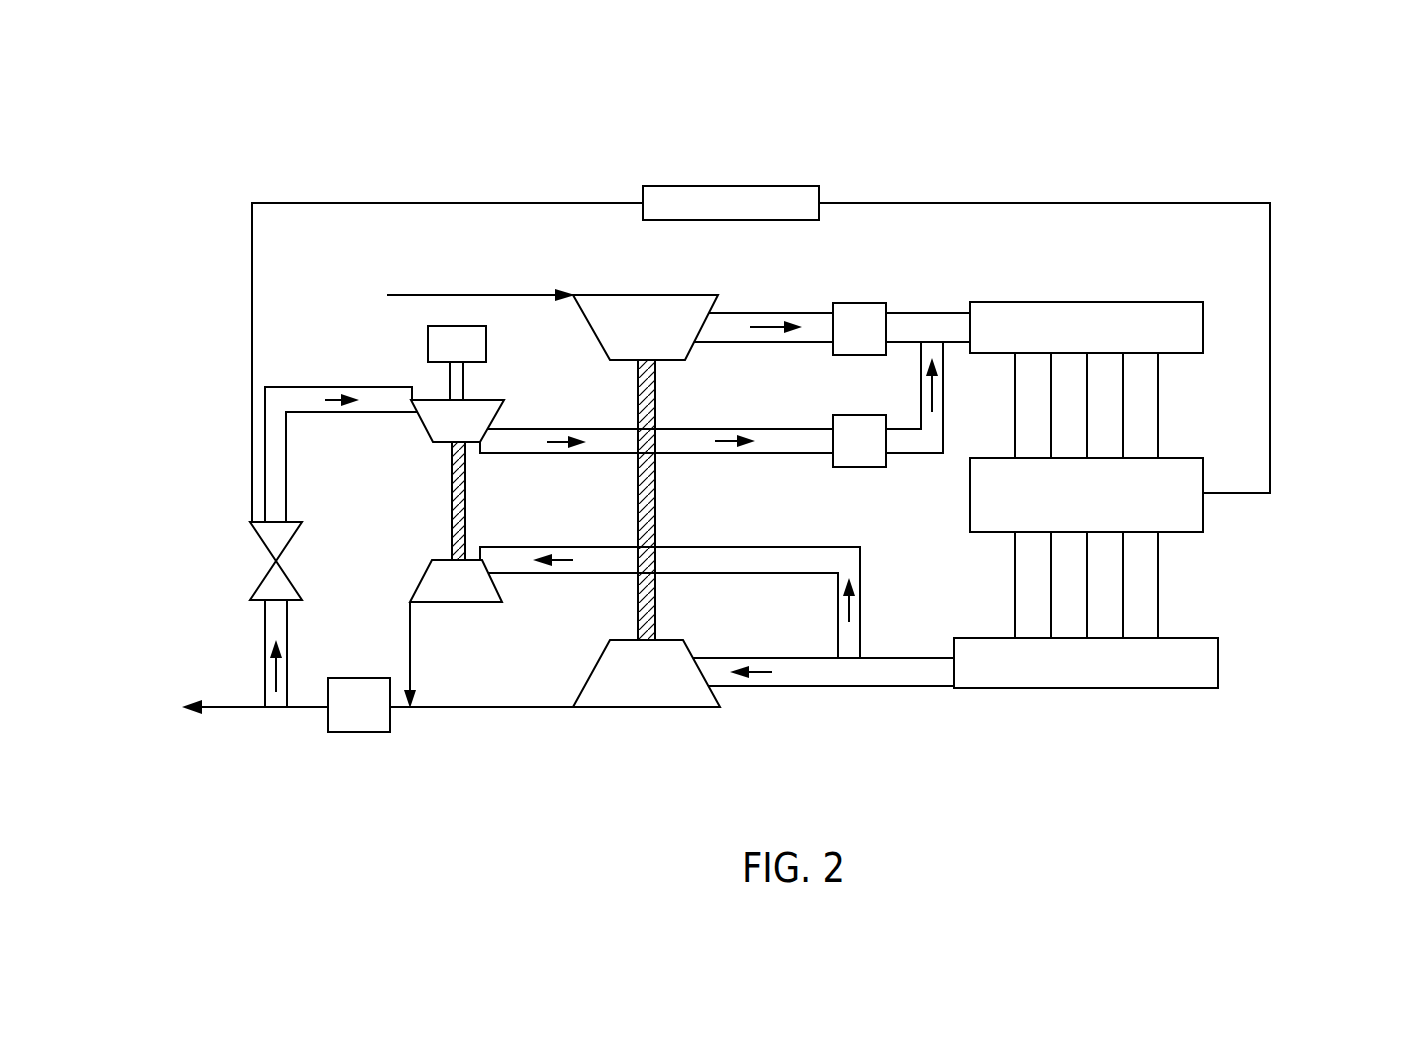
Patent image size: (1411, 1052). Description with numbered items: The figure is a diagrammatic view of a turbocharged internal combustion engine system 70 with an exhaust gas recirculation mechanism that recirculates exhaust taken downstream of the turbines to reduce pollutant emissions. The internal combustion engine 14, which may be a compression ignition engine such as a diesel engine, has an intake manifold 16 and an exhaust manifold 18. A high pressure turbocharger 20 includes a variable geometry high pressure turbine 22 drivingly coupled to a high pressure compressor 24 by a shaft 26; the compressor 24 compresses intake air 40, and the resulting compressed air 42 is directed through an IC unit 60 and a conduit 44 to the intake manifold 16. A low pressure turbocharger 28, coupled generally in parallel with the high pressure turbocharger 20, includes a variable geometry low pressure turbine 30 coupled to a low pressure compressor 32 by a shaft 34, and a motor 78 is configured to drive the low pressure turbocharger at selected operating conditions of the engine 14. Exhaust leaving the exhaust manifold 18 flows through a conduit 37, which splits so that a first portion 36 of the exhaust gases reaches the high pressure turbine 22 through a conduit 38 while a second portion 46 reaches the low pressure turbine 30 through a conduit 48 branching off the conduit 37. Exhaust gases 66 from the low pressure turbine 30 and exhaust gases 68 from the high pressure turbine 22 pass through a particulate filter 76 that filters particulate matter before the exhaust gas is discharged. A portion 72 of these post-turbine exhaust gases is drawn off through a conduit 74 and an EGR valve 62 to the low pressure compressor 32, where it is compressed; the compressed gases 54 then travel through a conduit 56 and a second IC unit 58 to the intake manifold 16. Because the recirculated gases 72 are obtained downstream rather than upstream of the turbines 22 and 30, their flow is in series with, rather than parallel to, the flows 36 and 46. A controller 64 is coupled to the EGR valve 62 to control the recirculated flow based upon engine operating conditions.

The turbocharged internal combustion engine system 70 is at (1306, 92).
The controller 64 is at (730, 186).
The intake air 40 is at (540, 295).
The high pressure compressor 24 is at (648, 295).
The compressed air 42 is at (770, 318).
The intercooler 60 is at (858, 303).
The conduit 44 is at (930, 326).
The intake manifold 16 is at (1203, 327).
The internal combustion engine 14 is at (1203, 512).
The exhaust manifold 18 is at (1218, 663).
The motor 78 is at (486, 342).
The low pressure compressor 32 is at (490, 400).
The compressed gases 54 is at (722, 437).
The conduit 56 is at (788, 428).
The intercooler 58 is at (862, 467).
The high pressure turbocharger 20 is at (668, 514).
The shaft 26 is at (657, 592).
The low pressure turbocharger 28 is at (453, 501).
The shaft 34 is at (465, 507).
The variable geometry low pressure turbine 30 is at (487, 602).
The conduit 48 is at (860, 560).
The second portion of exhaust gases 46 is at (850, 607).
The variable geometry high pressure turbine 22 is at (645, 707).
The first portion of exhaust gases 36 is at (762, 671).
The conduit 38 is at (763, 688).
The conduit 37 is at (870, 702).
The exhaust gases from the low pressure turbine 66 is at (410, 650).
The exhaust gases from the high pressure turbine 68 is at (482, 707).
The particulate filter 76 is at (360, 678).
The conduit 74 is at (288, 690).
The portion of exhaust gases 72 is at (268, 660).
The EGR valve 62 is at (258, 602).